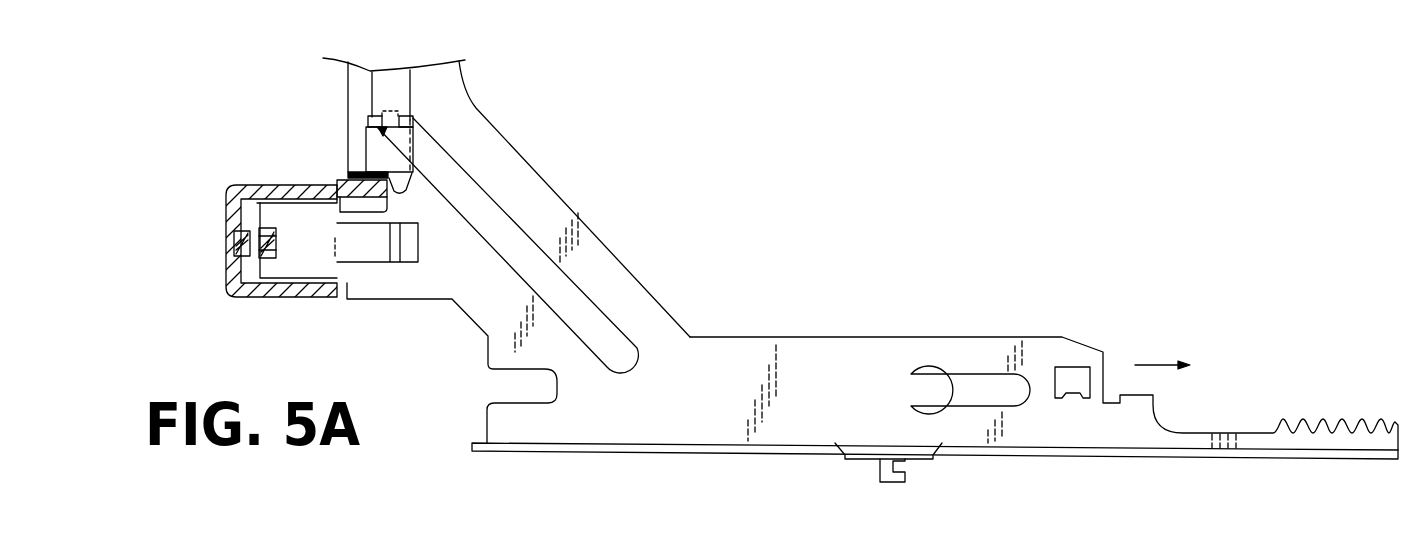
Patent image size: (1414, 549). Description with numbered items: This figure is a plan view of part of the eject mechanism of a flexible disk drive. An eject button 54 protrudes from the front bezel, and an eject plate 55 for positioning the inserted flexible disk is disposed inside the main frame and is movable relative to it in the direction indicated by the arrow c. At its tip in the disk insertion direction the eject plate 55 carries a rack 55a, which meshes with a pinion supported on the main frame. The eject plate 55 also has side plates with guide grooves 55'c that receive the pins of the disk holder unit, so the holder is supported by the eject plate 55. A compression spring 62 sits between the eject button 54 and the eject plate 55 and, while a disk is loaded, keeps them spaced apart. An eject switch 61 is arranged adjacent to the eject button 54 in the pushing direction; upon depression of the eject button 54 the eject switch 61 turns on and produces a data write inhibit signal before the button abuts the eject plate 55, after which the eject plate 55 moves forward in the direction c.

The eject button 54 is at (282, 298).
The eject plate 55 is at (860, 254).
The rack 55a is at (1340, 444).
The guide groove 55'c is at (822, 496).
The eject switch 61 is at (372, 144).
The compression spring 62 is at (255, 226).
The direction c is at (1147, 362).